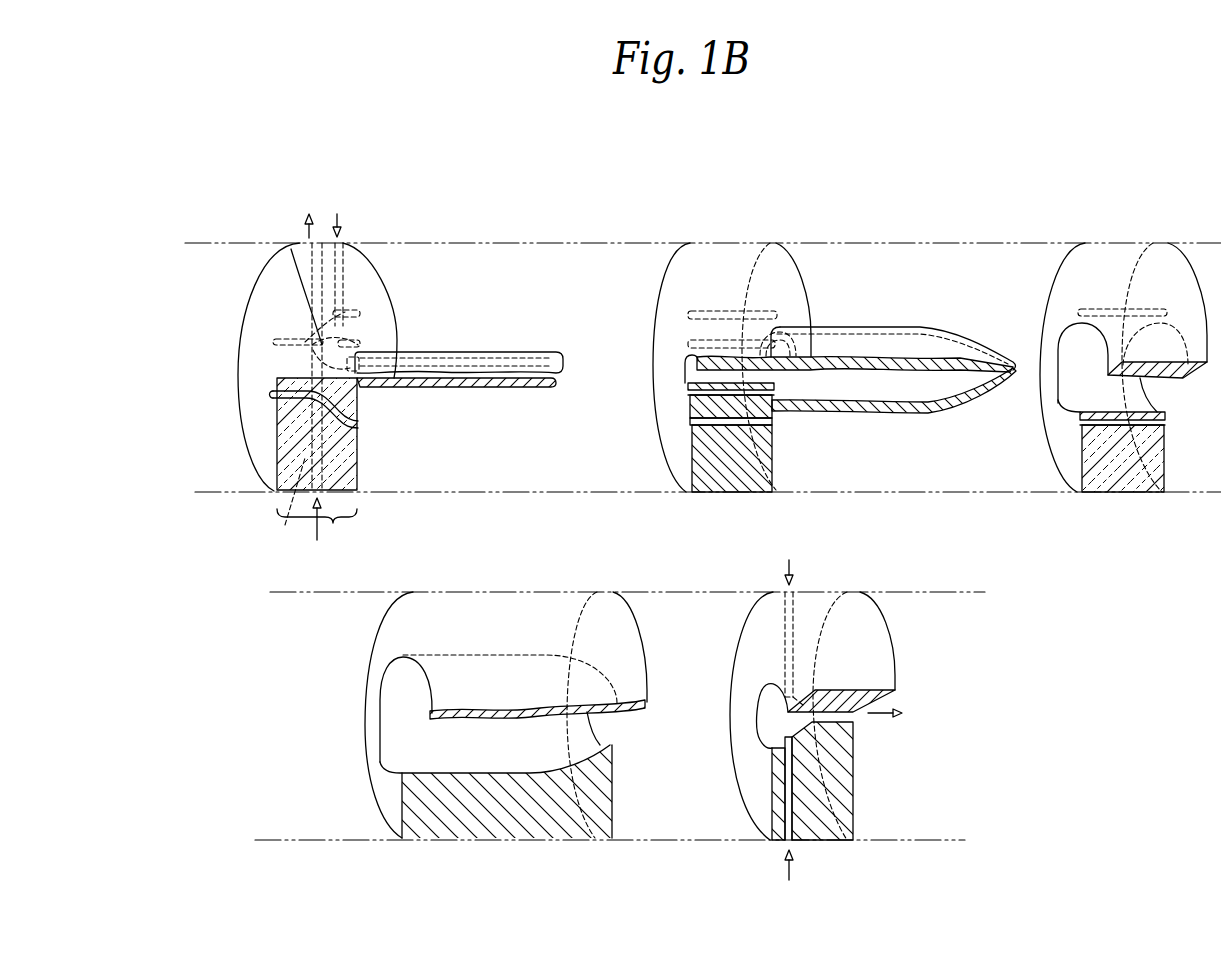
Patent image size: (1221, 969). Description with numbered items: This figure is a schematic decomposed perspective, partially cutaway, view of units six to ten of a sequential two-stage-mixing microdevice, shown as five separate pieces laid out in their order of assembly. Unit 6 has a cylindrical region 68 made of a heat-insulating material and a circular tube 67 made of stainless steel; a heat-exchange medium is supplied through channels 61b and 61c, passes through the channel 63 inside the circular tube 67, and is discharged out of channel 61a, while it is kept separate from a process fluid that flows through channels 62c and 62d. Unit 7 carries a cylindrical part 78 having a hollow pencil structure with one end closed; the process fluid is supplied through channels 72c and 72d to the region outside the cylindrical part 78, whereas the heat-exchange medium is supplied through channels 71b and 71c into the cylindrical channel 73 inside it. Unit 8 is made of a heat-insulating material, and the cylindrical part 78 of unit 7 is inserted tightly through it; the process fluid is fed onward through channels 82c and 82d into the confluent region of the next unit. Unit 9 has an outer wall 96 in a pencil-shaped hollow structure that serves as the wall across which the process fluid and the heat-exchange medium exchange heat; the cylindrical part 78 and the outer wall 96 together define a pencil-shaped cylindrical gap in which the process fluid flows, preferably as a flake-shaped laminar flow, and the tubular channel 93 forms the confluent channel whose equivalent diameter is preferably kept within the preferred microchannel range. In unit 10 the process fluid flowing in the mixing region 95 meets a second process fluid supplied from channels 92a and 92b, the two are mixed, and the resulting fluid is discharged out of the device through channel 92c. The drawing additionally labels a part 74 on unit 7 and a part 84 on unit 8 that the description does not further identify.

The unit 6 is at (350, 243).
The channel 61a is at (292, 250).
The channel 61b is at (341, 285).
The channel 61c is at (280, 502).
The channel 62c is at (280, 331).
The channel 62d is at (274, 395).
The channel 63 is at (470, 378).
The circular tube 67 is at (497, 352).
The cylindrical region 68 is at (317, 462).
The unit 7 is at (735, 243).
The channel 71b is at (705, 343).
The channel 71c is at (690, 388).
The channel 72c is at (705, 313).
The channel 72d is at (690, 422).
The cylindrical channel 73 is at (864, 392).
The projection 74 is at (690, 377).
The cylindrical part 78 is at (883, 337).
The unit 8 is at (1123, 243).
The channel 82c is at (1100, 310).
The channel 82d is at (1080, 422).
The hook portion 84 is at (1075, 380).
The unit 9 is at (522, 592).
The tubular channel 93 is at (408, 745).
The outer wall 96 is at (480, 768).
The unit 10 is at (823, 592).
The channel 92a is at (785, 640).
The channel 92b is at (785, 803).
The channel 92c is at (833, 723).
The channel (mixing region) 95 is at (778, 717).